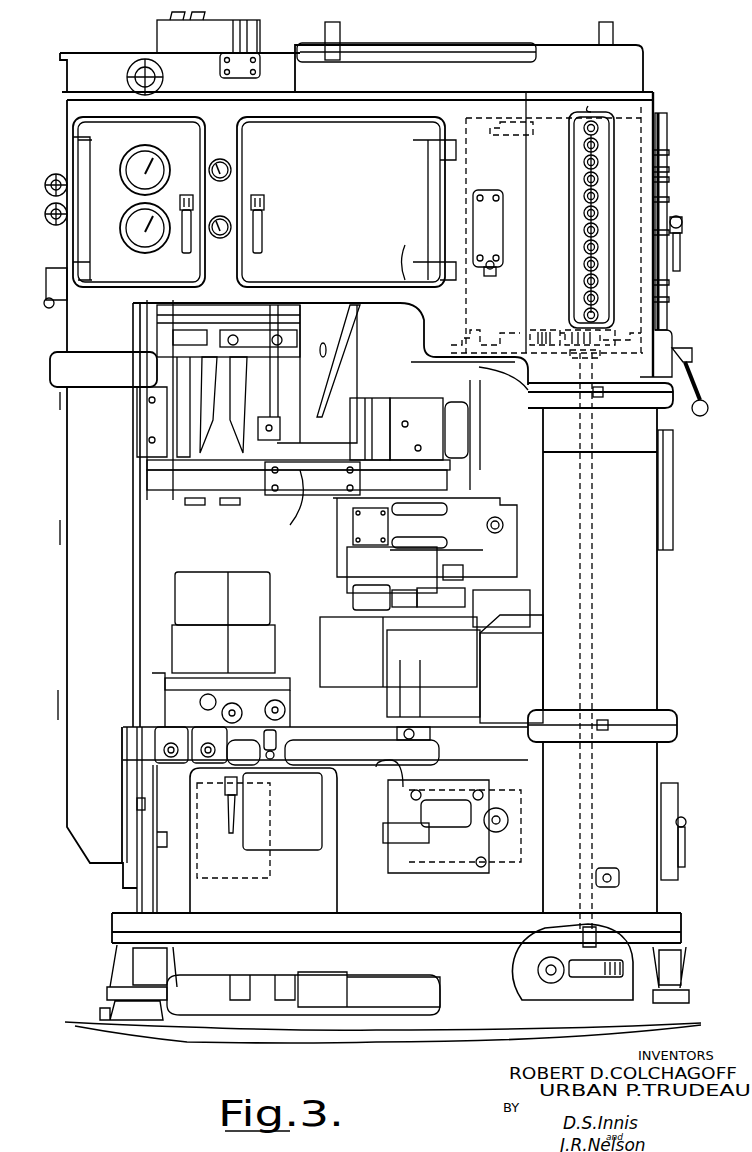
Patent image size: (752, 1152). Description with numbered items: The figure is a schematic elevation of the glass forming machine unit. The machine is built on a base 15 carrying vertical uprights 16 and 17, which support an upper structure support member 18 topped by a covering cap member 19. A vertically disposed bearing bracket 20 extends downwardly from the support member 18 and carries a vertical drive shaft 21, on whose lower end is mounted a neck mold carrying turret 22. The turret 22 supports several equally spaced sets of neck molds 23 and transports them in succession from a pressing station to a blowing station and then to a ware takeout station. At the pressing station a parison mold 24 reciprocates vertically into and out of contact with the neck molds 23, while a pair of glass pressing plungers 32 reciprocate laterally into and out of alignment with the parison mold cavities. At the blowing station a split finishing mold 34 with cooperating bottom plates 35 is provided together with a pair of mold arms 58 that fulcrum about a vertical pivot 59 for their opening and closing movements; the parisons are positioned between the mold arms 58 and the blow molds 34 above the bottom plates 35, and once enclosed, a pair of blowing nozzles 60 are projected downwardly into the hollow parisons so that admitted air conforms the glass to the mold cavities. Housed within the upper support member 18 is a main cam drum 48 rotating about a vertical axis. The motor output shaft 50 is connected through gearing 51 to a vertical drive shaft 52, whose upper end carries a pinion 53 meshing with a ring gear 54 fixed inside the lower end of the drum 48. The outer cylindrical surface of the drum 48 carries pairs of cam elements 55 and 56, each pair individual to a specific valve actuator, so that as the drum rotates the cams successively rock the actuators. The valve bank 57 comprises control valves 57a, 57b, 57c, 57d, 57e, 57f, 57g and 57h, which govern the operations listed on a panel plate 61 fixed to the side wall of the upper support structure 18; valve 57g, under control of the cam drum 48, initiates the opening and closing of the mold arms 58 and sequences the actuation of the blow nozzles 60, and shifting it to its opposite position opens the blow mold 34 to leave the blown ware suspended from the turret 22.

The base 15 is at (634, 765).
The vertical upright 16 is at (639, 580).
The vertical upright 17 is at (83, 603).
The upper structure support member 18 is at (386, 107).
The covering cap member 19 is at (628, 72).
The bearing bracket 20 is at (258, 374).
The drive shaft 21 is at (298, 467).
The neck mold carrying turret 22 is at (300, 495).
The neck molds 23 is at (222, 505).
The parison mold 24 is at (221, 649).
The glass pressing plungers 32 is at (243, 432).
The split finishing mold 34 is at (405, 570).
The bottom plates 35 is at (357, 598).
The main cam drum 48 is at (476, 133).
The output shaft 50 is at (551, 973).
The gearing 51 is at (648, 972).
The vertical drive shaft 52 is at (583, 425).
The pinion 53 is at (647, 337).
The ring gear 54 is at (482, 344).
The cam element 55 is at (492, 305).
The cam element 56 is at (533, 130).
The valve bank 57 is at (631, 229).
The control valve 57a is at (604, 116).
The control valve 57b is at (584, 196).
The control valve 57c is at (584, 213).
The control valve 57d is at (584, 230).
The control valve 57e is at (584, 248).
The control valve 57f is at (584, 265).
The control valve 57g is at (584, 298).
The control valve 57h is at (584, 315).
The mold arms 58 is at (425, 537).
The vertical pivot 59 is at (506, 488).
The blowing nozzles 60 is at (413, 423).
The panel plate 61 is at (576, 175).